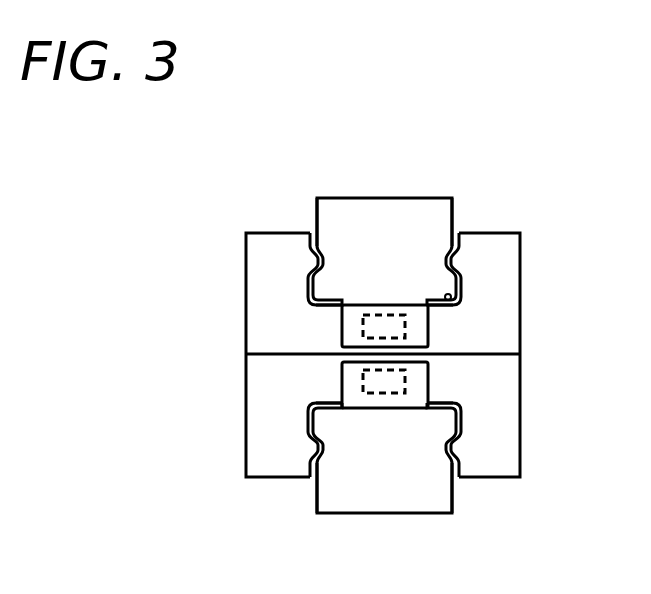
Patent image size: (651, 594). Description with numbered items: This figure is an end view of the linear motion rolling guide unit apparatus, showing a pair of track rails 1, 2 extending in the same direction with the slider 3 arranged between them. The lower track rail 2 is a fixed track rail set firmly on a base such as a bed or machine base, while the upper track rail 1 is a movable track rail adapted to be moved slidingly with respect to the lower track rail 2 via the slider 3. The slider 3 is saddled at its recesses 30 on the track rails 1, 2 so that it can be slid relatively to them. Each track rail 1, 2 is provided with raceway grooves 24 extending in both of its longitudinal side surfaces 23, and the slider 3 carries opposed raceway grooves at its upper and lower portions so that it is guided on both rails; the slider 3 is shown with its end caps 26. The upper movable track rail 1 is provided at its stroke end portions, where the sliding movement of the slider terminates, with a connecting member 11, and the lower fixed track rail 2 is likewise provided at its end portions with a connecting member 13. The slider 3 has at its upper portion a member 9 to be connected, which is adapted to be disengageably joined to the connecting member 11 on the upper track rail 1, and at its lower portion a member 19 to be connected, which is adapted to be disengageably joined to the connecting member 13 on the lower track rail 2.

The upper track rail 1 is at (377, 223).
The lower track rail 2 is at (382, 490).
The slider 3 is at (497, 278).
The member to be connected 9 is at (352, 326).
The connecting member 11 is at (424, 333).
The connecting member 13 is at (424, 383).
The member to be connected 19 is at (352, 383).
The longitudinal side surface 23 is at (317, 218).
The raceway groove 24 is at (308, 260).
The end cap 26 is at (265, 270).
The recess 30 is at (451, 295).